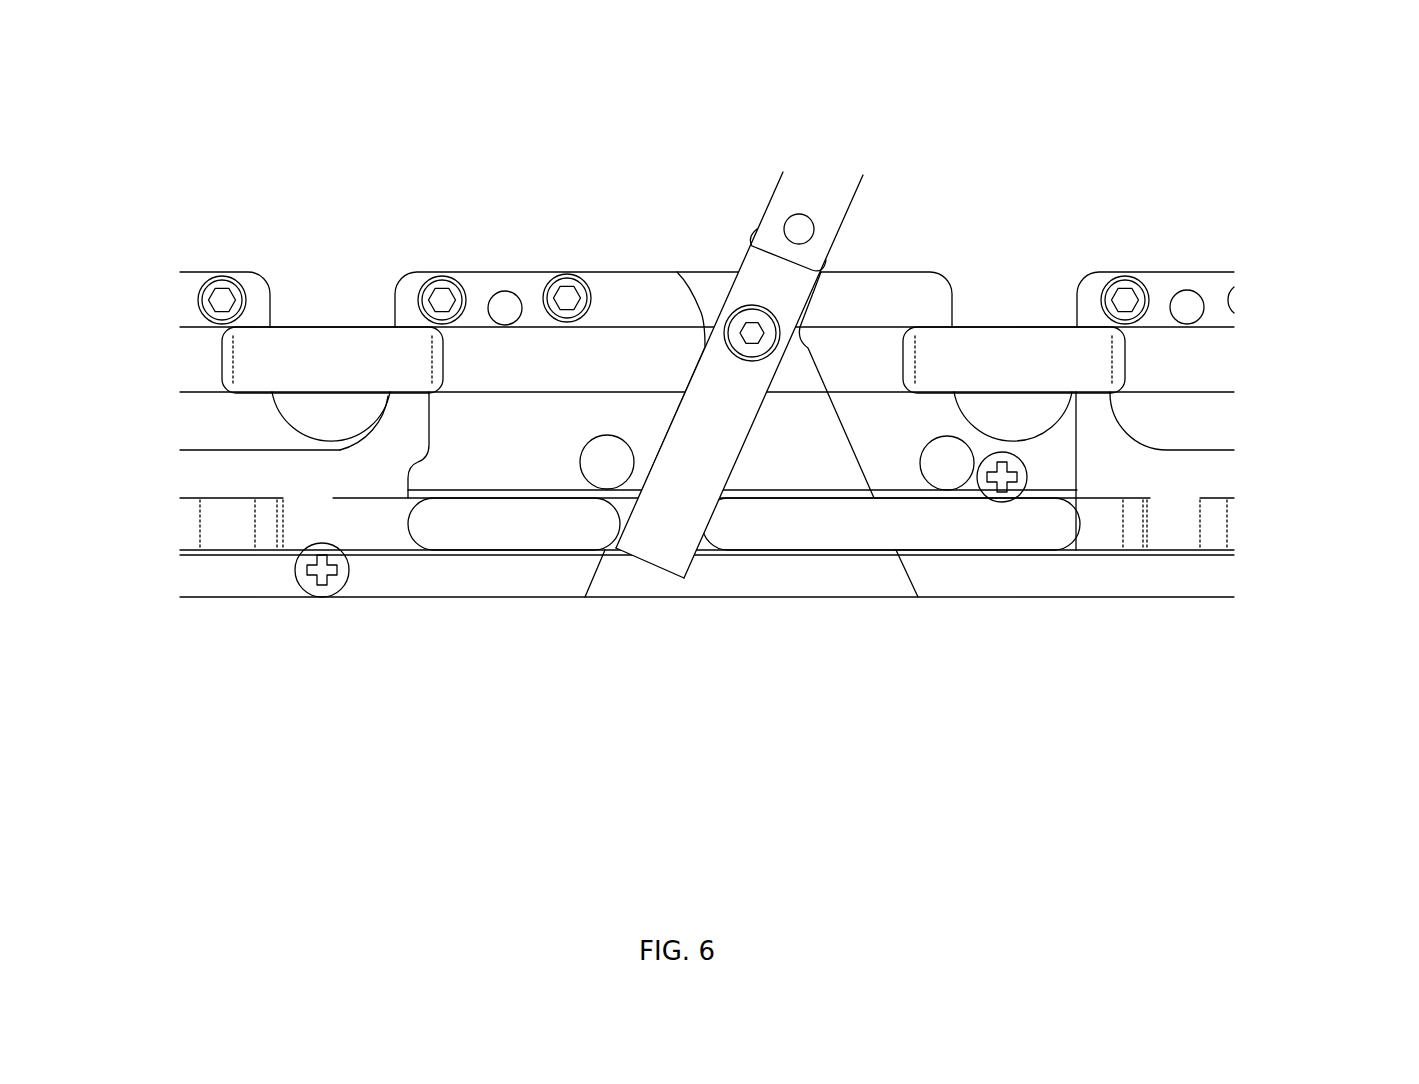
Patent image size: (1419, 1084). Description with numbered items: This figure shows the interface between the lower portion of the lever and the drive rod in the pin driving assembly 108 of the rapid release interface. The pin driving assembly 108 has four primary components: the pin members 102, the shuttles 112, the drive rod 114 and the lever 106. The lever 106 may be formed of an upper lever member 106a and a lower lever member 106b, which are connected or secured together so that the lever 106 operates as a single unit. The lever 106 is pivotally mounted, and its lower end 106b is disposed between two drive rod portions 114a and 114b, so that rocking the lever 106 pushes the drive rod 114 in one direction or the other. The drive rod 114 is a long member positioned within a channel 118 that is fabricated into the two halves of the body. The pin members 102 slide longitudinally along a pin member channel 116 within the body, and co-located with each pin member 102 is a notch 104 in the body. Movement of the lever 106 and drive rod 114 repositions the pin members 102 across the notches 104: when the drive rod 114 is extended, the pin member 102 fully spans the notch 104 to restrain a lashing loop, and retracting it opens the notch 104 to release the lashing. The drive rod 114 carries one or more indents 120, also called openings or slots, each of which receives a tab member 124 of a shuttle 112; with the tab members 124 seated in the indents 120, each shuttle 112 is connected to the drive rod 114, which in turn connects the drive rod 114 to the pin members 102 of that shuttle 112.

The pin member 102 is at (322, 327).
The notch 104 is at (374, 268).
The lever 106 is at (699, 171).
The upper lever member 106a is at (796, 188).
The lower lever member 106b is at (675, 555).
The pin driving assembly 108 is at (463, 134).
The shuttle 112 is at (1218, 472).
The drive rod 114 is at (998, 527).
The first drive rod portion 114a is at (748, 530).
The second drive rod portion 114b is at (567, 532).
The pin member channel 116 is at (1263, 358).
The channel 118 is at (1263, 526).
The indent 120 is at (1197, 577).
The tab member 124 is at (1087, 533).